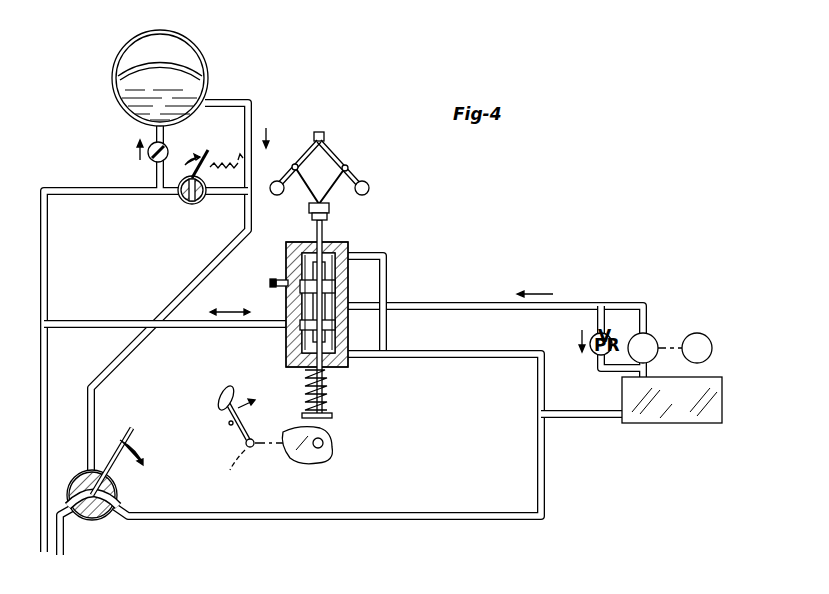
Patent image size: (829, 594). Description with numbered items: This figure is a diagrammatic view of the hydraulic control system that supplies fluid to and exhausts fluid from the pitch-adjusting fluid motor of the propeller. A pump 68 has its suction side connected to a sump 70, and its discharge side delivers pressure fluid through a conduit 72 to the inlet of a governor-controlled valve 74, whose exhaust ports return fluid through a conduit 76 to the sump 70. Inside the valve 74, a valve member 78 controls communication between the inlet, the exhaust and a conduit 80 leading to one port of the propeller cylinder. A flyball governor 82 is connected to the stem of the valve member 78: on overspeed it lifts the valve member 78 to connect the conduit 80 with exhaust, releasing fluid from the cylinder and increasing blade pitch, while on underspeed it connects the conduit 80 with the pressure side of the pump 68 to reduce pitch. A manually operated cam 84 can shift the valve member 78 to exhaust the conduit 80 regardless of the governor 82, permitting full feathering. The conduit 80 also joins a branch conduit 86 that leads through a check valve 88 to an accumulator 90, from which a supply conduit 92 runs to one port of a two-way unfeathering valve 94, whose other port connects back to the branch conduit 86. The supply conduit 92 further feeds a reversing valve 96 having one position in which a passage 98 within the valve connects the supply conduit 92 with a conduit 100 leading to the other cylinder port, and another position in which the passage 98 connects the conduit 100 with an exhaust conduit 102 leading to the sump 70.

The pump 68 is at (655, 338).
The sump 70 is at (696, 415).
The conduit 72 is at (460, 302).
The governor-controlled valve 74 is at (338, 245).
The conduit 76 is at (387, 279).
The valve member 78 is at (300, 279).
The conduit 80 is at (218, 329).
The flyball governor 82 is at (335, 162).
The cam 84 is at (305, 465).
The branch conduit 86 is at (41, 376).
The check valve 88 is at (166, 148).
The accumulator 90 is at (200, 64).
The supply conduit 92 is at (236, 101).
The two-way unfeathering valve 94 is at (198, 205).
The reversing valve 96 is at (117, 498).
The passage 98 is at (80, 478).
The conduit 100 is at (63, 537).
The exhaust conduit 102 is at (310, 520).